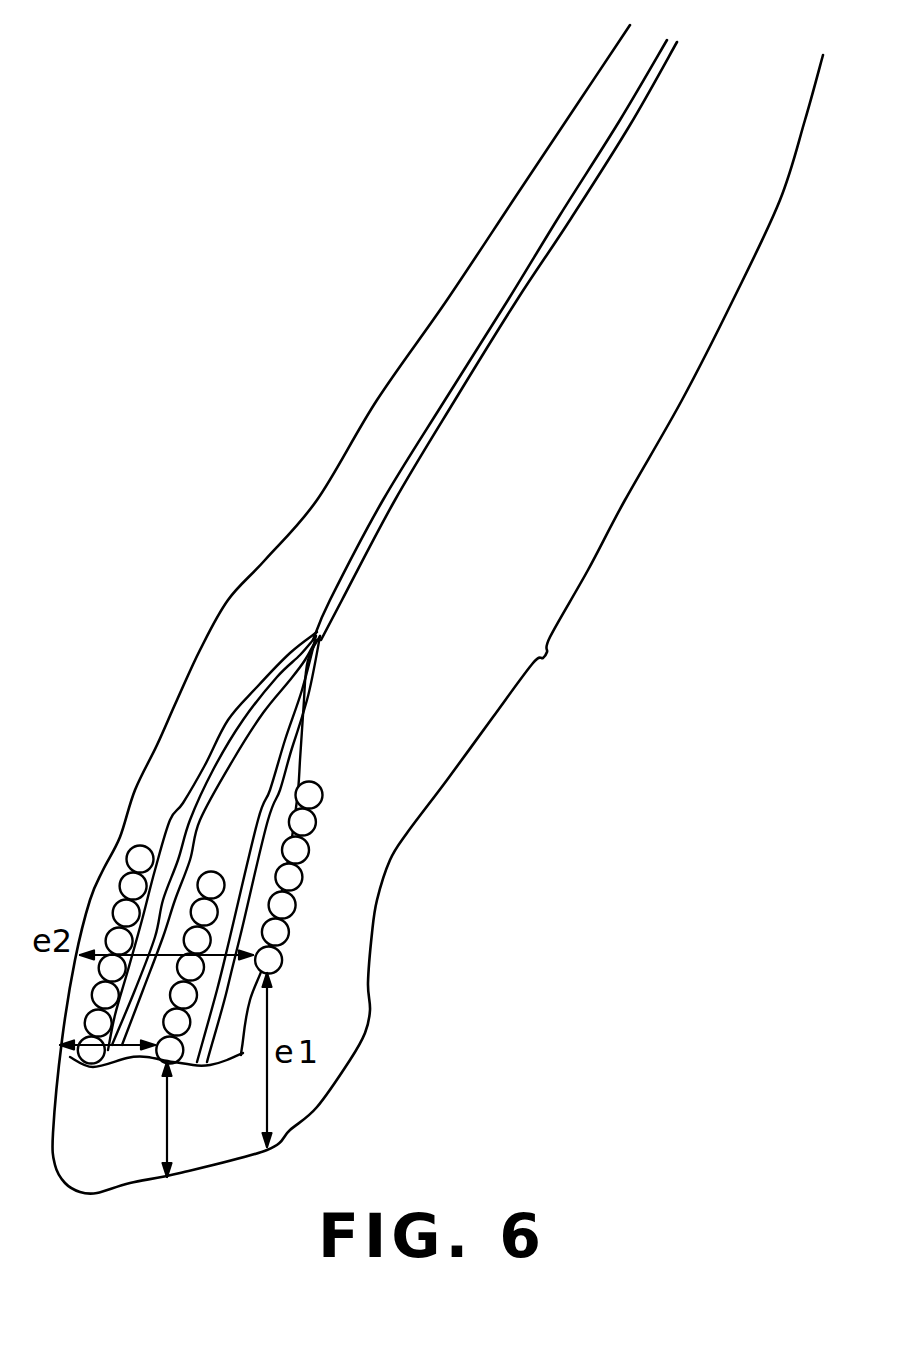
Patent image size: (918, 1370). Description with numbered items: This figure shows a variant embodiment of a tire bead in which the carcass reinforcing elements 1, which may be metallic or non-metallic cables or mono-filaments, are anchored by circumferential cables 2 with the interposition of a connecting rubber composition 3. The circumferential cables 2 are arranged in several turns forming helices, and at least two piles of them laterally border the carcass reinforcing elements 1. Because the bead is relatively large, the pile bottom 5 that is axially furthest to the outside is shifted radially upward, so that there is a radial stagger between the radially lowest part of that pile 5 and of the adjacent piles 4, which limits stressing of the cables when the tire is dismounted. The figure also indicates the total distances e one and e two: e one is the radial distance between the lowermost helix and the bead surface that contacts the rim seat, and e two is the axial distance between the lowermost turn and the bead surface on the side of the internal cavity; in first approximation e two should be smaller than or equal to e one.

The carcass reinforcing elements 1 is at (528, 270).
The circumferential cables 2 is at (307, 860).
The connecting rubber composition 3 is at (252, 777).
The adjacent piles 4 is at (153, 1070).
The pile bottom 5 is at (283, 963).